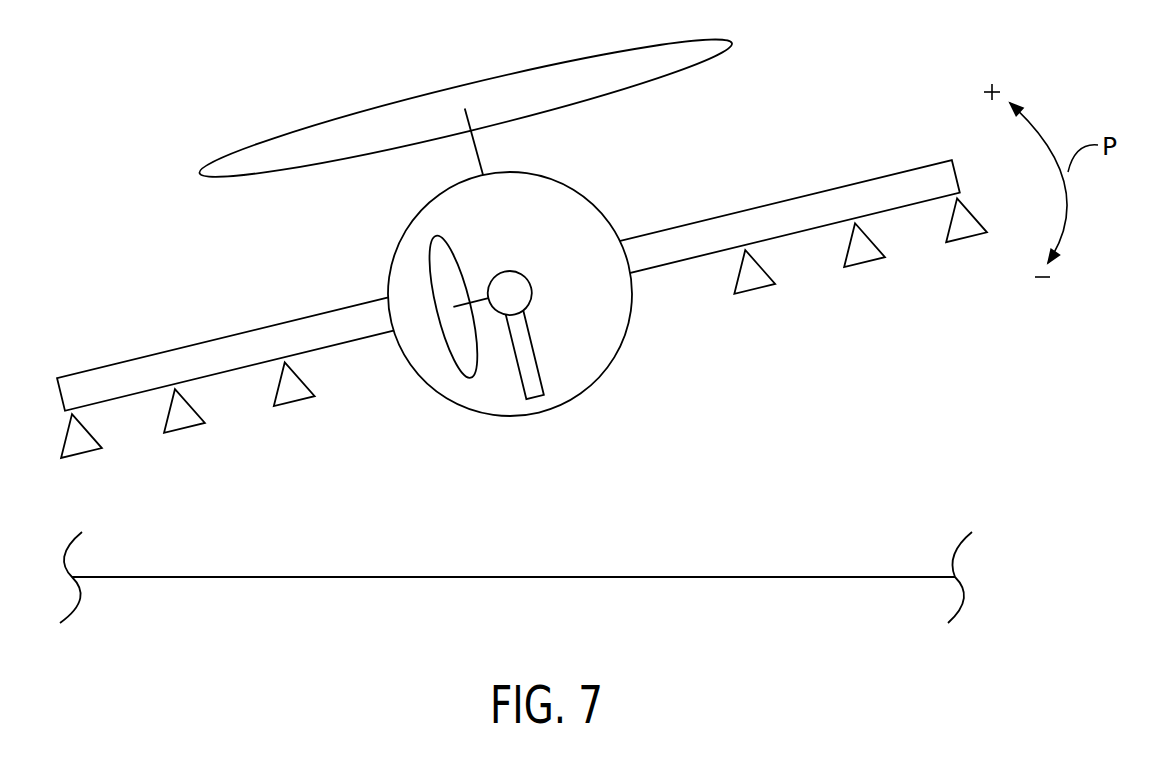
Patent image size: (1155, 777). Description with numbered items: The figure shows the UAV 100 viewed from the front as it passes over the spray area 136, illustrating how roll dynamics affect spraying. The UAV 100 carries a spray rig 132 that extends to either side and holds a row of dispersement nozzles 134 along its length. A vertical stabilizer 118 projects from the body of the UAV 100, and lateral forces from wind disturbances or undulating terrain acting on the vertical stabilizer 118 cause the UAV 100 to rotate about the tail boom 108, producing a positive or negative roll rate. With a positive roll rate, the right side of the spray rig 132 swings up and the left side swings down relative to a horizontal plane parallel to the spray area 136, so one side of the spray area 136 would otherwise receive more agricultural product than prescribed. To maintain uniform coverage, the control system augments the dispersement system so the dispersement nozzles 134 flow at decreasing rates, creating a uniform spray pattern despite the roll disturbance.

The UAV 100 is at (501, 262).
The tail boom 108 is at (517, 272).
The vertical stabilizer 118 is at (532, 348).
The spray rig 132 is at (810, 195).
The dispersement nozzles 134 is at (185, 427).
The spray area 136 is at (873, 578).